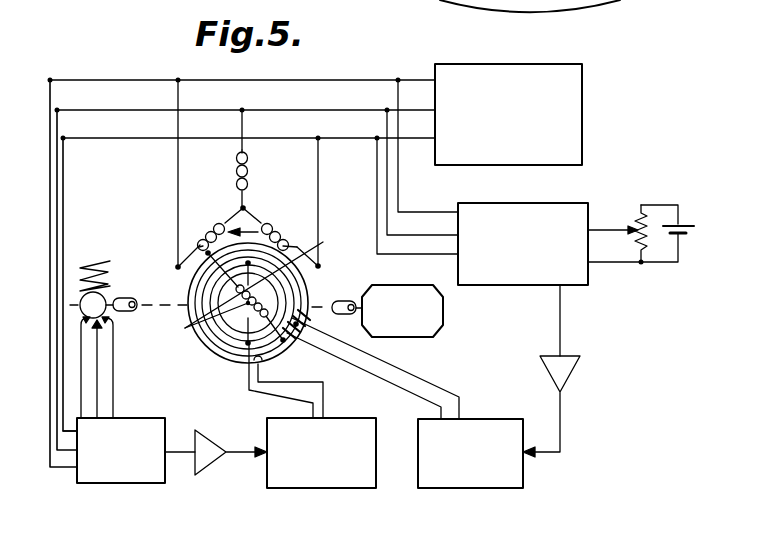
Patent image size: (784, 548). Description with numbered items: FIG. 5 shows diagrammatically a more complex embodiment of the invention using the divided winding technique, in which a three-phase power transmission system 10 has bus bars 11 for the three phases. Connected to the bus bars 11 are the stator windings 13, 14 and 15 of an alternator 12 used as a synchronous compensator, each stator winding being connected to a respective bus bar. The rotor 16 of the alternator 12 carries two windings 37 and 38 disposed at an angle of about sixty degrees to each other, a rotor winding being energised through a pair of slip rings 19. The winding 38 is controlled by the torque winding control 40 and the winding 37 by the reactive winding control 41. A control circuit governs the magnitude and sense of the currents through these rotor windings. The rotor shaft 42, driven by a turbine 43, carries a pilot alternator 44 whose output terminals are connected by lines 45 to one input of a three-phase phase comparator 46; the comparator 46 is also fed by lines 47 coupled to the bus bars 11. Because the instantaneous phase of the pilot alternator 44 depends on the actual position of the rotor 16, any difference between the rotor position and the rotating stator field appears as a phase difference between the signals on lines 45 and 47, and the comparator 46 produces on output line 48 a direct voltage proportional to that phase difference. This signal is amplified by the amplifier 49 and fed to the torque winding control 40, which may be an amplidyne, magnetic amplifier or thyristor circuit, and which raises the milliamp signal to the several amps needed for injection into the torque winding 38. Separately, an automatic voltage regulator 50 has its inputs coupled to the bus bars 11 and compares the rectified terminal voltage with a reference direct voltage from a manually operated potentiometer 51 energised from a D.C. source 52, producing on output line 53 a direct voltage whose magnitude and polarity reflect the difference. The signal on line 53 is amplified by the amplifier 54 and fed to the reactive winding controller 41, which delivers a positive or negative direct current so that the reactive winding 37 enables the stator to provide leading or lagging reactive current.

The power transmission system 10 is at (553, 90).
The bus bars 11 is at (297, 79).
The alternator 12 is at (201, 344).
The stator winding 13 is at (201, 234).
The stator winding 14 is at (254, 173).
The stator winding 15 is at (296, 234).
The rotor 16 is at (283, 290).
The slip rings 19 is at (303, 338).
The reactive winding 37 is at (275, 280).
The torque winding 38 is at (205, 320).
The torque winding control 40 is at (272, 438).
The reactive winding control 41 is at (416, 422).
The rotor shaft 42 is at (345, 316).
The turbine 43 is at (393, 294).
The pilot alternator 44 is at (105, 293).
The lines 45 is at (112, 382).
The phase comparator 46 is at (142, 423).
The lines 47 is at (72, 433).
The output line 48 is at (173, 448).
The amplifier 49 is at (209, 440).
The automatic voltage regulator 50 is at (492, 208).
The potentiometer 51 is at (640, 258).
The D.C. source 52 is at (672, 228).
The output line 53 is at (560, 315).
The amplifier 54 is at (568, 368).